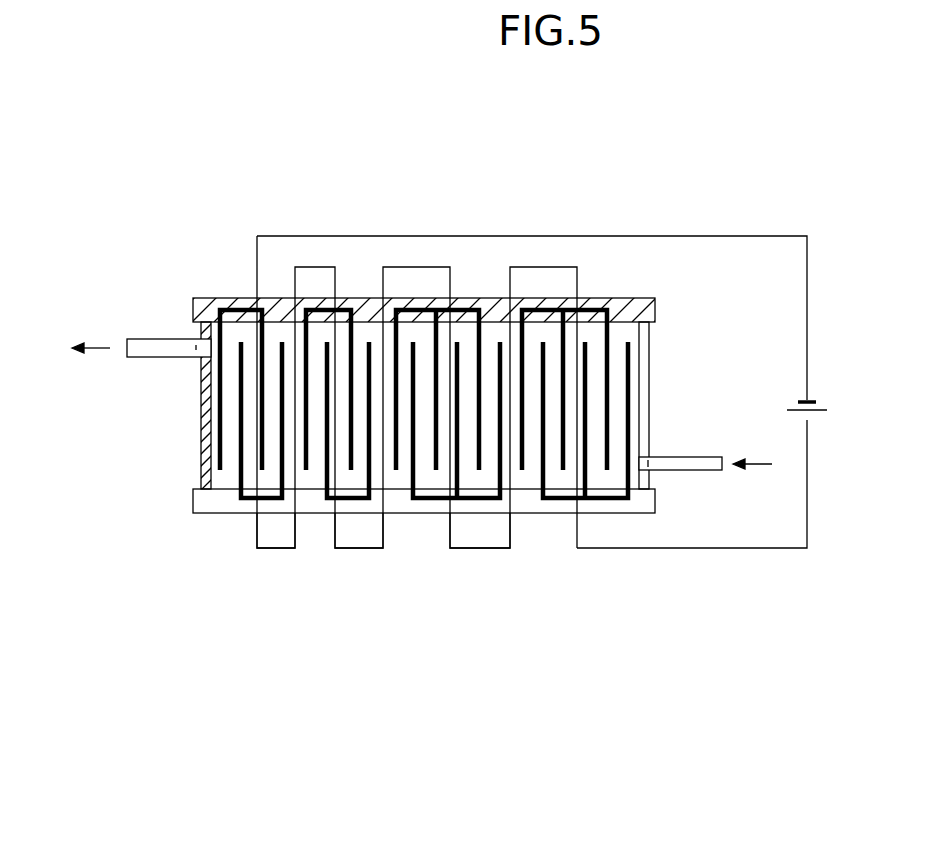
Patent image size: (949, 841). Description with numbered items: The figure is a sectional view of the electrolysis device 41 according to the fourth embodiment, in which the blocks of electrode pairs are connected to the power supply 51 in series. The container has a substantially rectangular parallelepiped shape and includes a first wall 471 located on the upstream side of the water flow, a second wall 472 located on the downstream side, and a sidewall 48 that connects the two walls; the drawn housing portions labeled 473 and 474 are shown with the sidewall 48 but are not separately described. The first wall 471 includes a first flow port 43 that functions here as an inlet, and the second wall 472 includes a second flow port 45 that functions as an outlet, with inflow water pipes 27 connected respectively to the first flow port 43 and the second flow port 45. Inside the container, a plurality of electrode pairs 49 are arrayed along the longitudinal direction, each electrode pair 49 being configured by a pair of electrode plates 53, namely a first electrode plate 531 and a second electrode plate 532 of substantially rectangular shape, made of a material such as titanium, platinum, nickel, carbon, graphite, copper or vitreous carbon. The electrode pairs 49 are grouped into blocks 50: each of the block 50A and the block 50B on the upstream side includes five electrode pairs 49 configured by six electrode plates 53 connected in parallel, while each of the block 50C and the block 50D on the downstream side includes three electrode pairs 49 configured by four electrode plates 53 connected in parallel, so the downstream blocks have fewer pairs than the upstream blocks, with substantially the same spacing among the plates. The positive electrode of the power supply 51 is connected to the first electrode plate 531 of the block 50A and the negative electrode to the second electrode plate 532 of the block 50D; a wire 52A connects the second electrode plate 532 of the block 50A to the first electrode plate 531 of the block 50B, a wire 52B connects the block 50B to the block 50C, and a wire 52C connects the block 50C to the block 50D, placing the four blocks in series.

The electrolysis device 41 is at (115, 106).
The inflow water pipe 27 is at (152, 348).
The first flow port 43 is at (650, 465).
The second flow port 45 is at (196, 348).
The sidewall 48 is at (447, 404).
The first wall 471 is at (650, 366).
The second wall 472 is at (202, 450).
The lower wall 473 is at (643, 510).
The right side wall 474 is at (646, 325).
The electrode pair 49 is at (220, 442).
The block 50 is at (417, 424).
The block 50A is at (620, 330).
The block 50B is at (492, 340).
The block 50C is at (362, 340).
The block 50D is at (220, 424).
The power supply 51 is at (814, 420).
The wire 52A is at (495, 548).
The wire 52B is at (365, 548).
The wire 52C is at (272, 548).
The electrode plate 53 is at (417, 424).
The first electrode plate 531 is at (243, 455).
The second electrode plate 532 is at (348, 340).